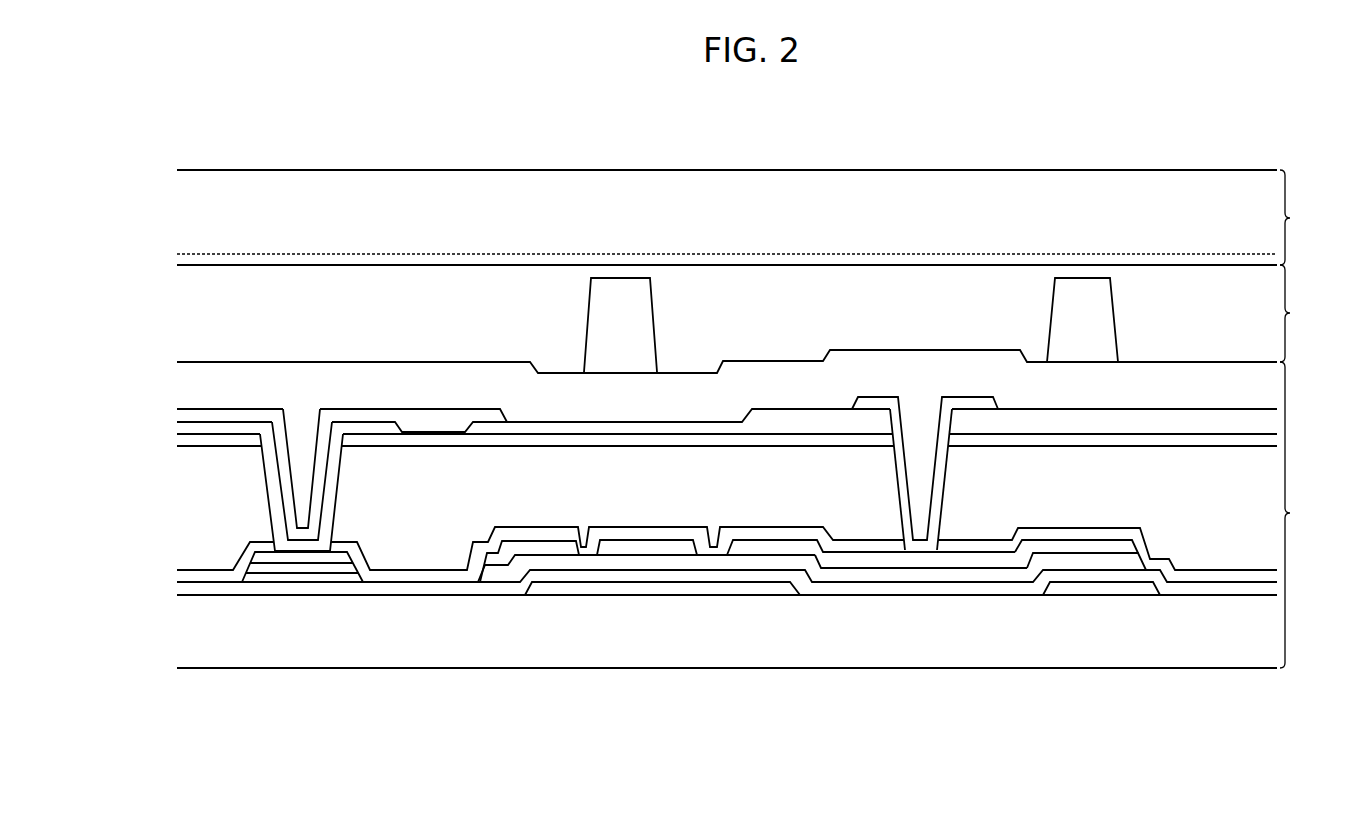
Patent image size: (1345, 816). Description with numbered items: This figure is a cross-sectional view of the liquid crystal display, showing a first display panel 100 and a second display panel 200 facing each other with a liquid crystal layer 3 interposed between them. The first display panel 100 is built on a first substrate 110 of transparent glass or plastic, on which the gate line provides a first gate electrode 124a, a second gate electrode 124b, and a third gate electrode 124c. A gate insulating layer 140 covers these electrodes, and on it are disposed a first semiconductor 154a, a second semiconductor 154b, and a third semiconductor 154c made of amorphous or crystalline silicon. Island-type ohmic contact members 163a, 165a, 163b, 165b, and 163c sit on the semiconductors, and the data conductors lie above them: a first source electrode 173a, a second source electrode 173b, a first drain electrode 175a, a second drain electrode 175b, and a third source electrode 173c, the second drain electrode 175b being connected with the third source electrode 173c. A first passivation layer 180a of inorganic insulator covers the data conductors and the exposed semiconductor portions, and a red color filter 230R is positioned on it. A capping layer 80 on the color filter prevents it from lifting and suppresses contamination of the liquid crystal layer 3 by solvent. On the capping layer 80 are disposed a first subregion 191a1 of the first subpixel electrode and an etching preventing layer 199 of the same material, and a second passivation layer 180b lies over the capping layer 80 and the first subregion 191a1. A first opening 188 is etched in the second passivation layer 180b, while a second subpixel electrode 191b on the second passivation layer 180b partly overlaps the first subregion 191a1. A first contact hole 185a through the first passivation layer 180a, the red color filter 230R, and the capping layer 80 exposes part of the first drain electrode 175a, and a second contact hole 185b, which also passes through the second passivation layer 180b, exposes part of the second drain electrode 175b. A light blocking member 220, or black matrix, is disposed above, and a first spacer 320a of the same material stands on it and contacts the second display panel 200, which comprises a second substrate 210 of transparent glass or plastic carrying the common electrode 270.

The second substrate 210 is at (1207, 192).
The common electrode 270 is at (850, 258).
The first spacer 320a is at (627, 295).
The light blocking member 220 is at (473, 373).
The etching preventing layer 199 is at (530, 423).
The first opening 188 is at (752, 420).
The first contact hole 185a is at (337, 477).
The first subregion of the first subpixel electrode 191a1 is at (383, 428).
The second subpixel electrode 191b is at (877, 403).
The second contact hole 185b is at (943, 468).
The second passivation layer 180b is at (1243, 420).
The capping layer 80 is at (1143, 437).
The red color filter 230R is at (1027, 470).
The first passivation layer 180a is at (1245, 575).
The first drain electrode 175a is at (337, 560).
The island-type ohmic contact member 165a is at (300, 565).
The first semiconductor 154a is at (260, 567).
The island-type ohmic contact member 163a is at (537, 555).
The island-type ohmic contact member 163b is at (690, 555).
The island-type ohmic contact member 165b is at (792, 555).
The second semiconductor 154b is at (847, 577).
The third semiconductor 154c is at (1072, 565).
The island-type ohmic contact member 163c is at (1095, 555).
The first source electrode 173a is at (523, 545).
The second source electrode 173b is at (650, 547).
The second drain electrode 175b is at (762, 545).
The third source electrode 173c is at (970, 555).
The first gate electrode 124a is at (563, 588).
The second gate electrode 124b is at (722, 588).
The third gate electrode 124c is at (1133, 587).
The gate insulating layer 140 is at (885, 587).
The first substrate 110 is at (1183, 648).
The second display panel 200 is at (1304, 217).
The liquid crystal layer 3 is at (1294, 313).
The first display panel 100 is at (1304, 515).